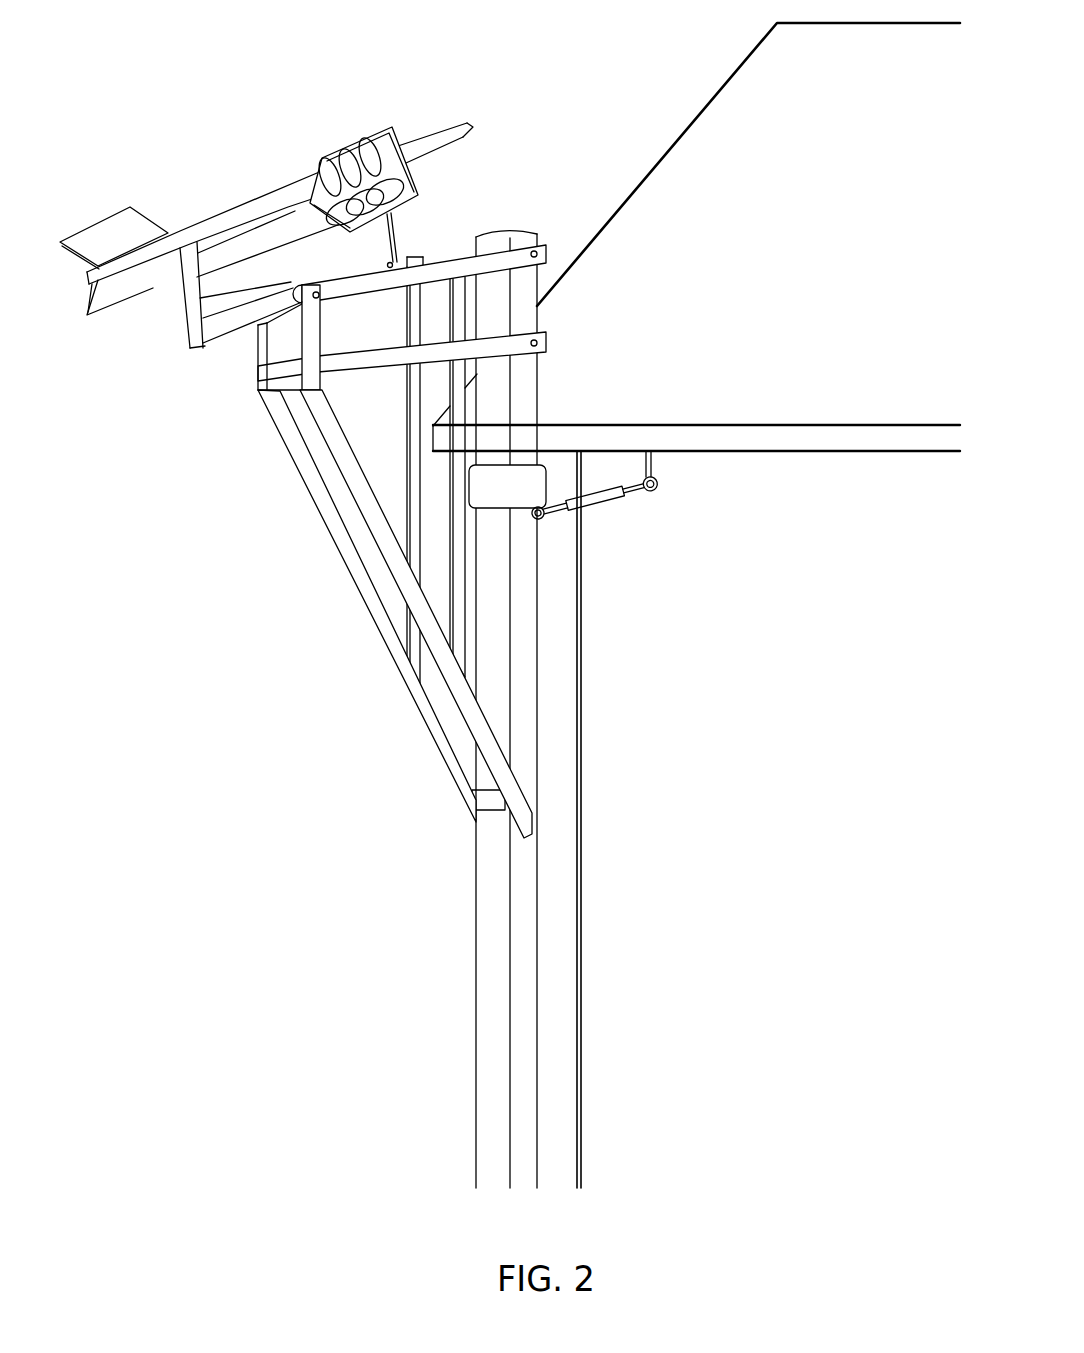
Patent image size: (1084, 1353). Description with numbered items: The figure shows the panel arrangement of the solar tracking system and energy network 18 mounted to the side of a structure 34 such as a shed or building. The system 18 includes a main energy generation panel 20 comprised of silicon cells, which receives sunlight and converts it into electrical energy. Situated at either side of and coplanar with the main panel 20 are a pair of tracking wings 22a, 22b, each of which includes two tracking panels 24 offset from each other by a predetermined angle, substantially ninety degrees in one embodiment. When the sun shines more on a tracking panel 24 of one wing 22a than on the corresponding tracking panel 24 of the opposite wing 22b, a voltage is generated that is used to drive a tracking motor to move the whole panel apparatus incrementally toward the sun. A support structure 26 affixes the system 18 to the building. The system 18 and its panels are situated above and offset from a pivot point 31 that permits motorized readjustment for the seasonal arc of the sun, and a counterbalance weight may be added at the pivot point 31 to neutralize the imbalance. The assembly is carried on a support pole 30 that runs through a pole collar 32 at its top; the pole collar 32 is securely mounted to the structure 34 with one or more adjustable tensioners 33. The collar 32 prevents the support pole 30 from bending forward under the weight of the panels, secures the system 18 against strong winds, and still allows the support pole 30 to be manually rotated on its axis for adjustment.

The solar tracking system and energy network 18 is at (565, 104).
The main energy generation panel 20 is at (262, 185).
The tracking wing 22a is at (336, 142).
The tracking wing 22b is at (78, 296).
The tracking panel 24 is at (398, 178).
The support structure 26 is at (340, 587).
The support pole 30 is at (490, 945).
The pivot point 31 is at (298, 290).
The pole collar 32 is at (530, 487).
The adjustable tensioner 33 is at (605, 500).
The structure 34 is at (753, 240).